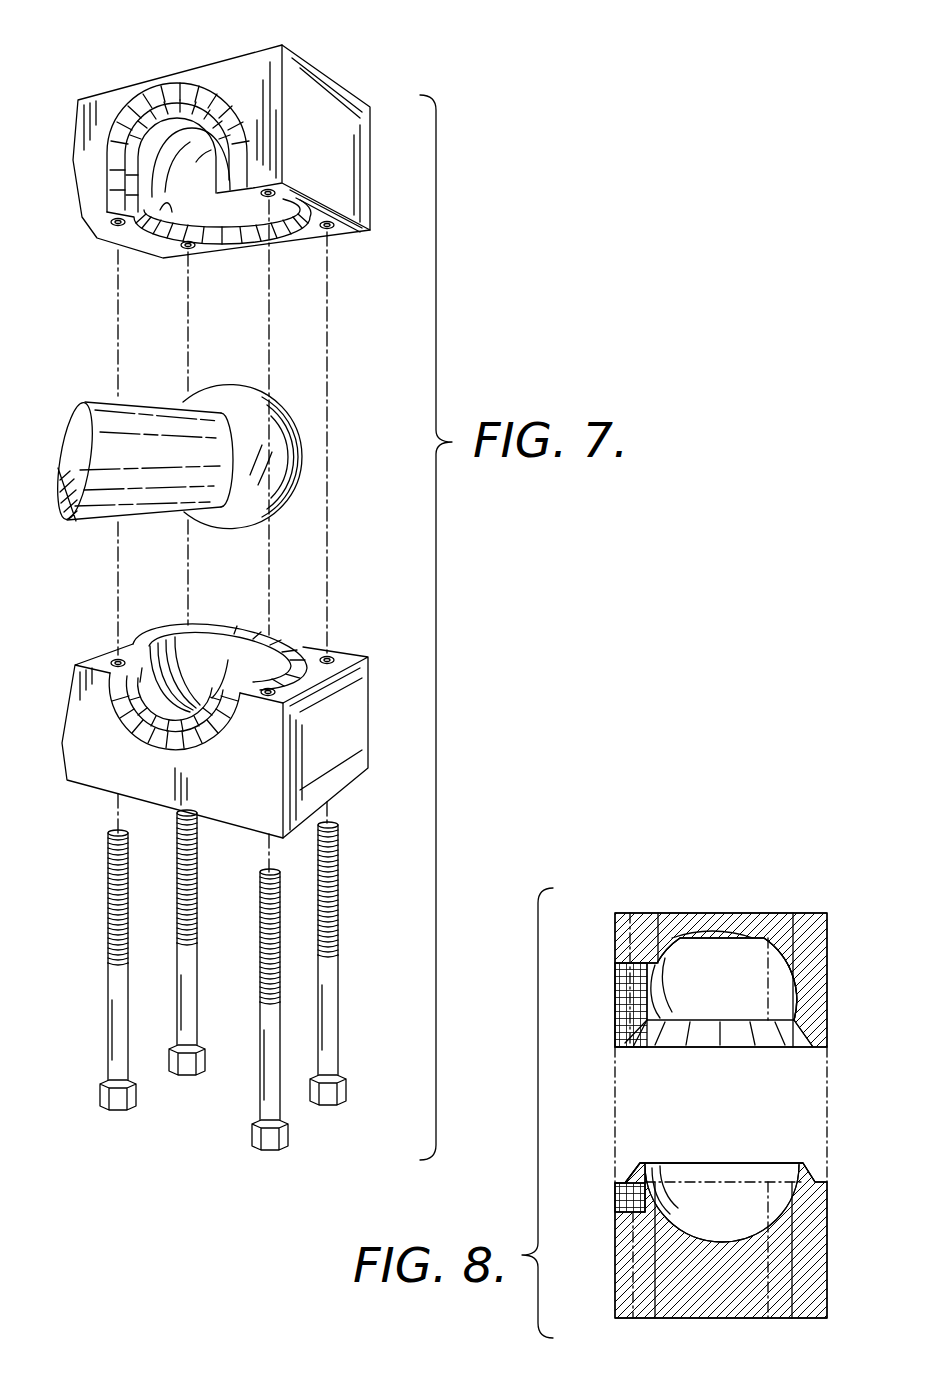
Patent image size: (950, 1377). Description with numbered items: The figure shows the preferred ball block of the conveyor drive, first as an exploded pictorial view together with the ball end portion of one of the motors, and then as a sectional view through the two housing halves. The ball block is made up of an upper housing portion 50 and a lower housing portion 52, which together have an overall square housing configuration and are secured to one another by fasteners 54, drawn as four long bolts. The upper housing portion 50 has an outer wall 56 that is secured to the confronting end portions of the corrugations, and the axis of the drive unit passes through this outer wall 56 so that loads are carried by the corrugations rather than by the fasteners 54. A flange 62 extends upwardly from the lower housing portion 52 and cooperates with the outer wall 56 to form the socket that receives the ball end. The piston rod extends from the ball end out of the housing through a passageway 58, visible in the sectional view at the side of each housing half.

In FIG. 7, the upper housing portion 50 is at (137, 72).
In FIG. 8, the upper housing portion 50 is at (757, 900).
In FIG. 7, the lower housing portion 52 is at (87, 803).
In FIG. 8, the lower housing portion 52 is at (835, 1245).
In FIG. 7, the fasteners 54 is at (347, 965).
In FIG. 8, the outer wall 56 is at (827, 987).
In FIG. 8, the passageway 58 is at (620, 975).
In FIG. 7, the flange 62 is at (285, 633).
In FIG. 8, the flange 62 is at (803, 1163).